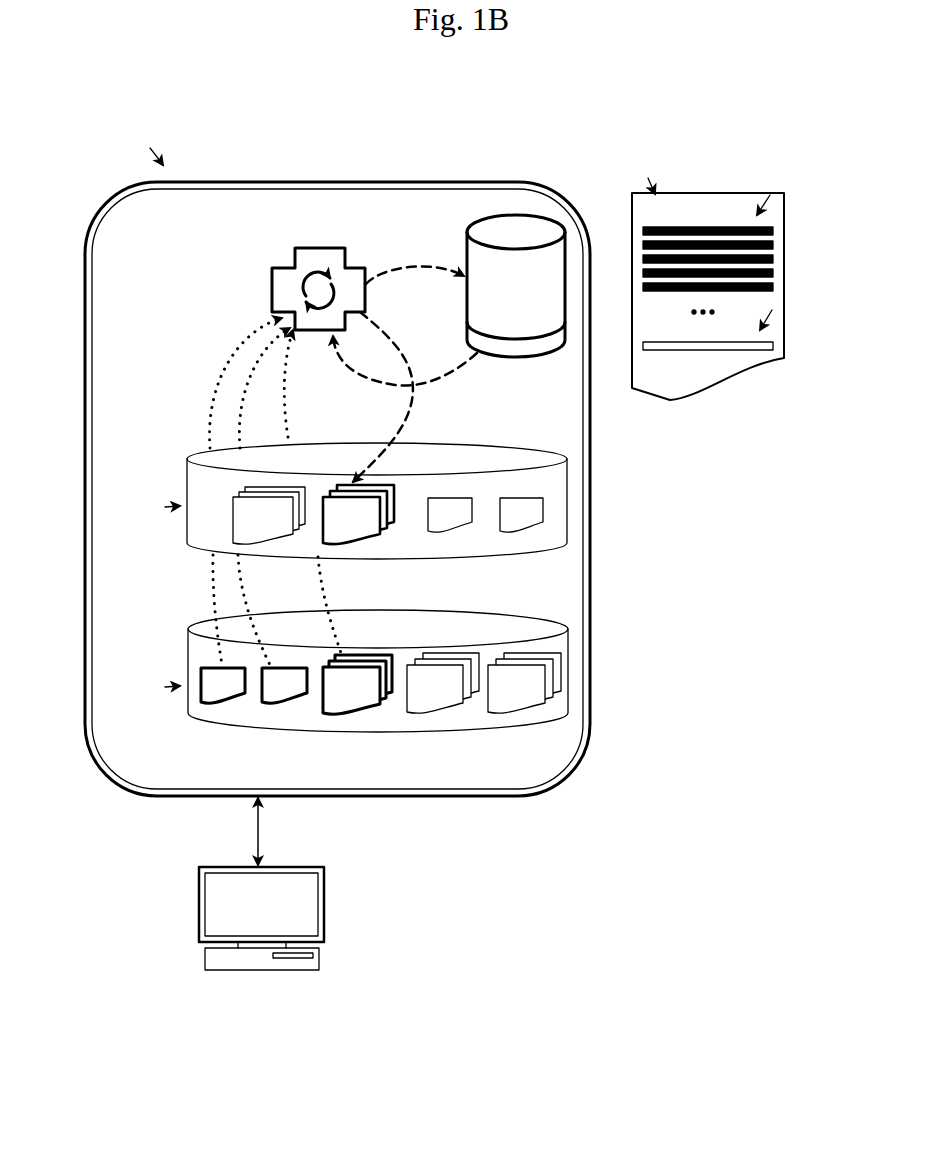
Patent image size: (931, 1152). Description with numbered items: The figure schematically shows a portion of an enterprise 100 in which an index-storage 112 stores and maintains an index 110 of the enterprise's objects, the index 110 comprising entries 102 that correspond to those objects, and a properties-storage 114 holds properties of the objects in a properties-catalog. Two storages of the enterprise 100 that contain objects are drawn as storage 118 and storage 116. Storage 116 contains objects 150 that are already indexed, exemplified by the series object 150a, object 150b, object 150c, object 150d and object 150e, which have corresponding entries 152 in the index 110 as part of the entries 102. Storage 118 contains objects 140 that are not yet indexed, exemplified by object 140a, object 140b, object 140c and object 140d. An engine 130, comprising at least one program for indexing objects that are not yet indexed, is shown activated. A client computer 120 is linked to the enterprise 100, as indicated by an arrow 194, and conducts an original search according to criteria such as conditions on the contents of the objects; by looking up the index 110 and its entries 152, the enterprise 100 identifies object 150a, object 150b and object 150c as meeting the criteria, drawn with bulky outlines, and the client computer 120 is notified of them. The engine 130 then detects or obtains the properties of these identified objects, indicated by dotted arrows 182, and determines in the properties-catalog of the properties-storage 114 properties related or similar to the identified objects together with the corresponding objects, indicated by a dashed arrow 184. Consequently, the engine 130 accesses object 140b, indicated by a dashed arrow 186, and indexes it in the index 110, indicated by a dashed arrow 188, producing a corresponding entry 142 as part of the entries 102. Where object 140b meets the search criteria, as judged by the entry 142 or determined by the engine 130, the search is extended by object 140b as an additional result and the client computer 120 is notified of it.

The enterprise 100 is at (163, 163).
The entries 102 is at (724, 289).
The index 110 is at (712, 385).
The index-storage 112 is at (500, 300).
The properties-storage 114 is at (530, 362).
The storage 116 is at (192, 632).
The storage 118 is at (190, 460).
The client computer 120 is at (208, 866).
The engine 130 is at (303, 250).
The objects 140 is at (335, 510).
The object 140a is at (256, 543).
The object 140b is at (350, 543).
The object 140c is at (450, 531).
The object 140d is at (520, 531).
The entry 142 is at (760, 330).
The objects 150 is at (335, 679).
The object 150a is at (218, 702).
The object 150b is at (278, 702).
The object 150c is at (348, 713).
The object 150d is at (428, 712).
The object 150e is at (514, 712).
The entries 152 is at (757, 215).
The dotted arrows 182 is at (226, 360).
The dashed arrow 184 is at (346, 372).
The dashed arrow 186 is at (416, 404).
The dashed arrow 188 is at (395, 272).
The arrow 194 is at (262, 826).